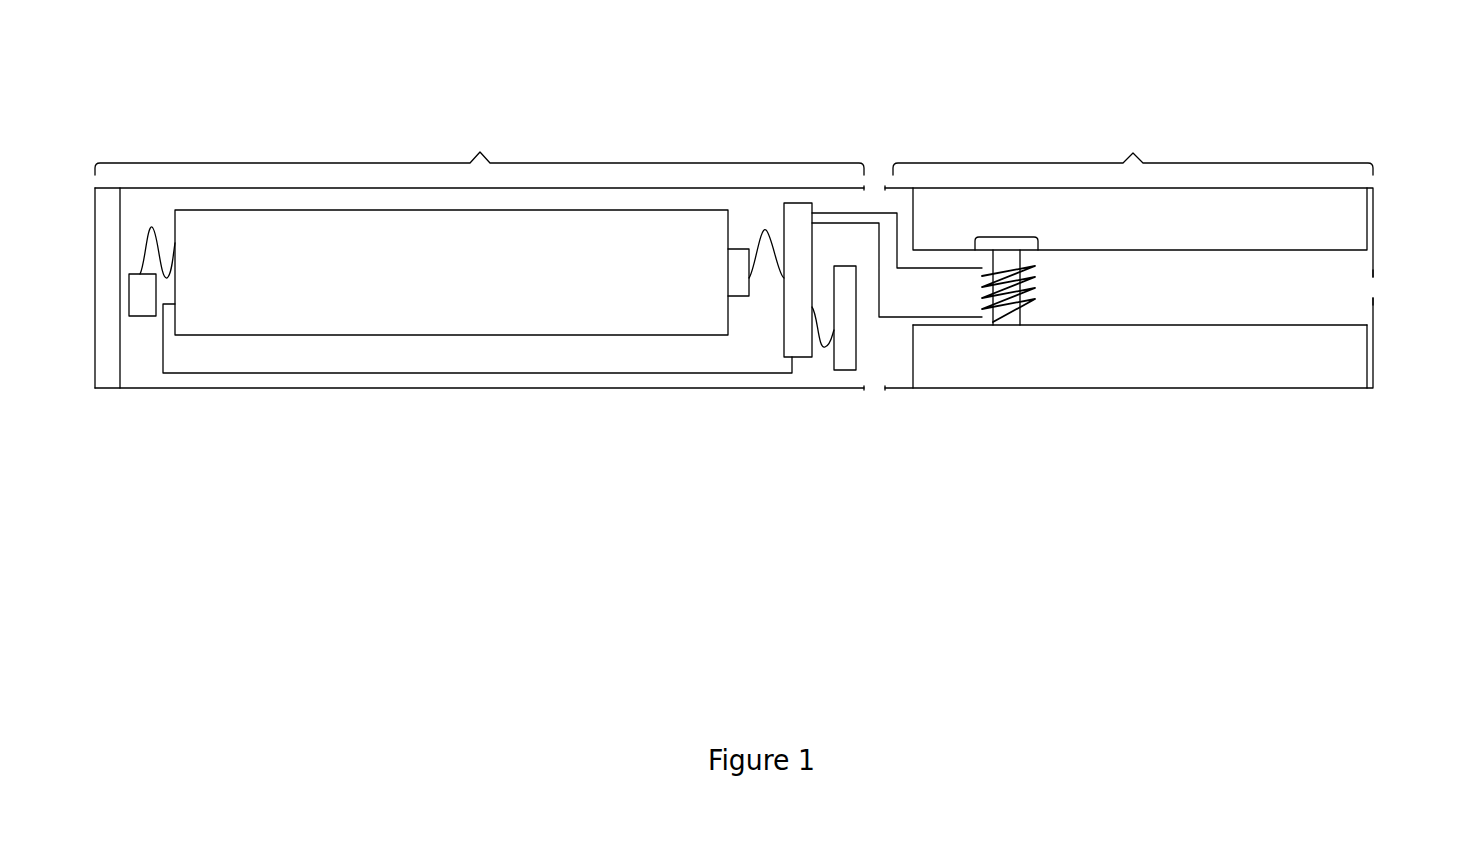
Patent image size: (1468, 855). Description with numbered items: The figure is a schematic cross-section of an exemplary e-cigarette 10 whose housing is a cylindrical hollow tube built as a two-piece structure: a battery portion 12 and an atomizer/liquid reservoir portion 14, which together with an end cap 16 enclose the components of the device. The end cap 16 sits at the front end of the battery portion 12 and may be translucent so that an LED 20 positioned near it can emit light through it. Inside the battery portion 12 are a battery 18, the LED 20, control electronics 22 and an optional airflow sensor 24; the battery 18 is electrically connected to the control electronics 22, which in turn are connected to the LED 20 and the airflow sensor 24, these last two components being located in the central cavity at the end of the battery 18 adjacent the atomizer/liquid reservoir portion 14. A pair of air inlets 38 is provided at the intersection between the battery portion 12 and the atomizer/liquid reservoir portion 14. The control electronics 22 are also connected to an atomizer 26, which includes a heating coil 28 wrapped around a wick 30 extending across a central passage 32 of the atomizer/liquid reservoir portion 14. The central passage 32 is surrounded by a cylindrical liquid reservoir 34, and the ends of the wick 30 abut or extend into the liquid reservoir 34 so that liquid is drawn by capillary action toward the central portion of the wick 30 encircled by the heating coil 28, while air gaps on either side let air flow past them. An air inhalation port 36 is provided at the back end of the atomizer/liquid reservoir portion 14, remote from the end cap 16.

The e-cigarette 10 is at (363, 110).
The battery portion 12 is at (479, 144).
The atomizer/liquid reservoir portion 14 is at (1133, 146).
The end cap 16 is at (105, 378).
The battery 18 is at (325, 320).
The LED 20 is at (143, 316).
The control electronics 22 is at (798, 203).
The airflow sensor 24 is at (847, 370).
The atomizer 26 is at (1005, 237).
The heating coil 28 is at (984, 275).
The wick 30 is at (1008, 320).
The central passage 32 is at (1083, 310).
The liquid reservoir 34 is at (1275, 205).
The air inhalation port 36 is at (1373, 288).
The air inlets 38 is at (872, 187).